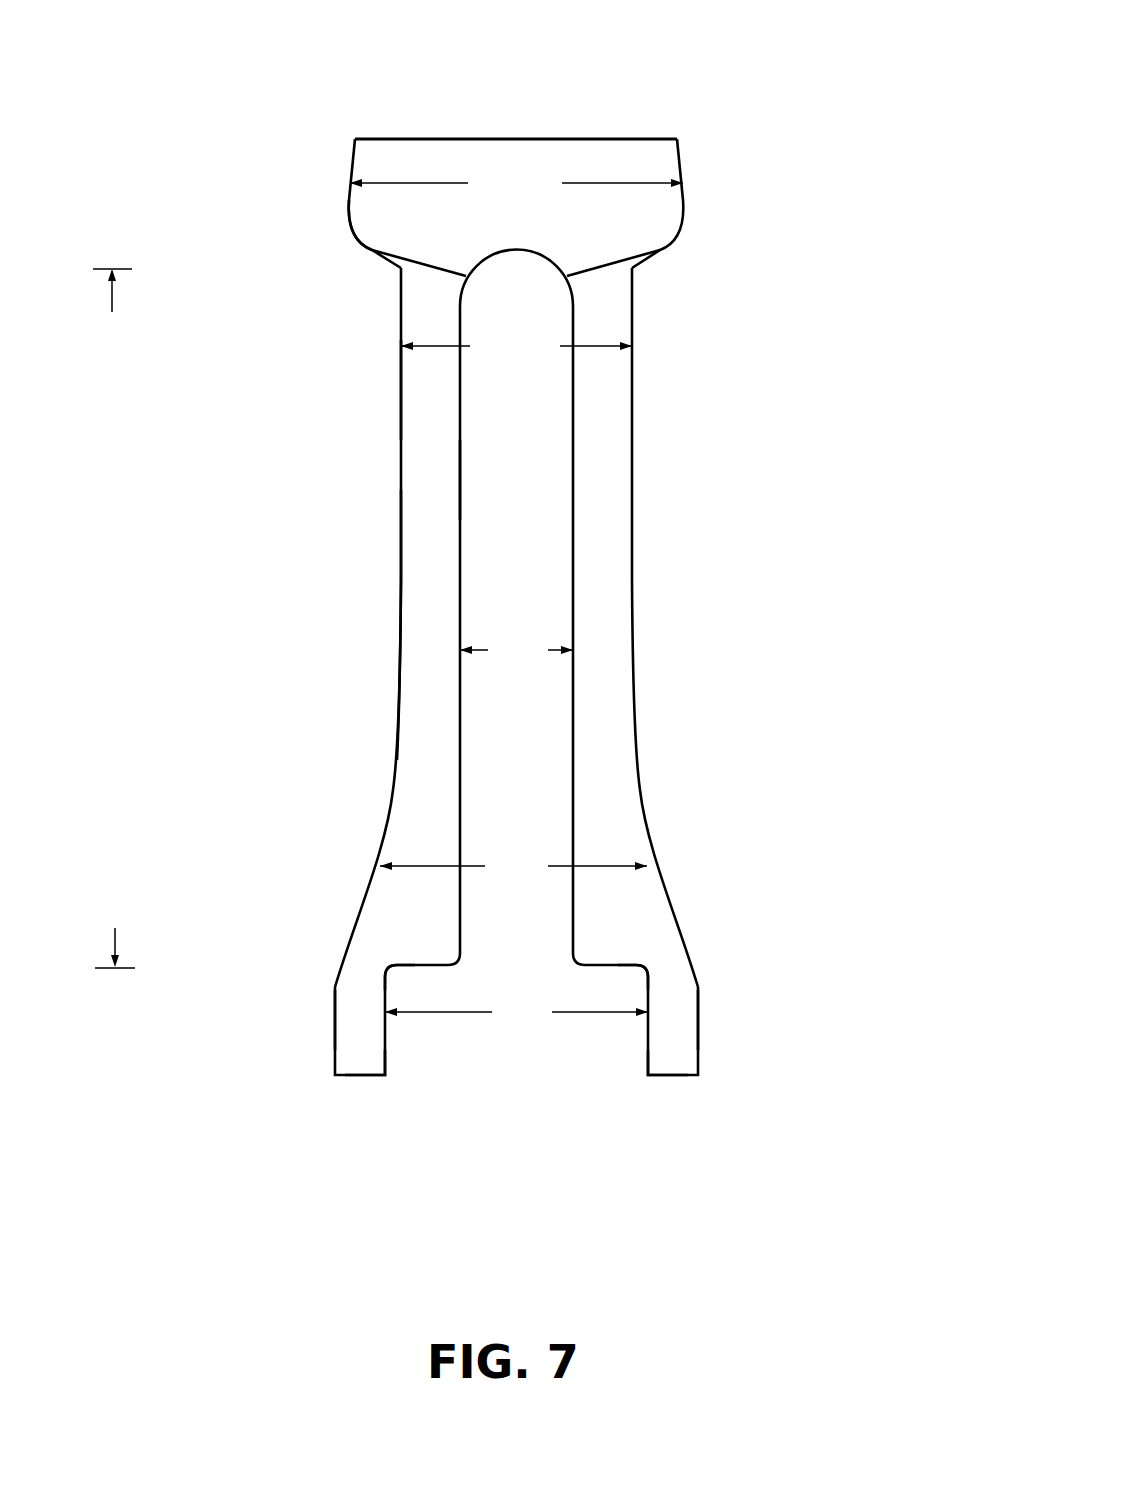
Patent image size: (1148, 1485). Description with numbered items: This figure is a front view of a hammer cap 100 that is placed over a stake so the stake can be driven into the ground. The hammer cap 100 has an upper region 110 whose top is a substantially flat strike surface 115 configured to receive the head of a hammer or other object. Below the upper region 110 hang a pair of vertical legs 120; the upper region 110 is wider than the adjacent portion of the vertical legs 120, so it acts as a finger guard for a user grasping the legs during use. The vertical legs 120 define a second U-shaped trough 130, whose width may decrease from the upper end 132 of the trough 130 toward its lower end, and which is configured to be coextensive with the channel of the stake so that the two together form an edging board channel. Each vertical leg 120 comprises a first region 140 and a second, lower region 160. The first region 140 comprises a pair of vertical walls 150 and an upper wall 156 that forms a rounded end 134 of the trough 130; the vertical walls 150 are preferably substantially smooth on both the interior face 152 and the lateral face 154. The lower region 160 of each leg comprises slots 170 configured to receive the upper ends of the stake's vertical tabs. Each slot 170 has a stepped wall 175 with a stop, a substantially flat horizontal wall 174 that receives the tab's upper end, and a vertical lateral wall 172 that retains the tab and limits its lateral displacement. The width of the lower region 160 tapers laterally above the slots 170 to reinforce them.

The hammer cap 100 is at (786, 446).
The upper region 110 is at (680, 145).
The strike surface 115 is at (608, 139).
The vertical legs 120 is at (399, 593).
The trough 130 is at (547, 402).
The upper end of the trough 132 is at (568, 275).
The rounded end 134 is at (401, 294).
The first region 140 is at (401, 387).
The vertical walls 150 is at (399, 537).
The interior face 152 is at (462, 480).
The lateral face 154 is at (399, 715).
The upper wall 156 is at (392, 258).
The lower region 160 is at (667, 885).
The slots 170 is at (426, 1065).
The lateral wall 172 is at (385, 1053).
The horizontal wall 174 is at (393, 968).
The stepped wall 175 is at (330, 1019).